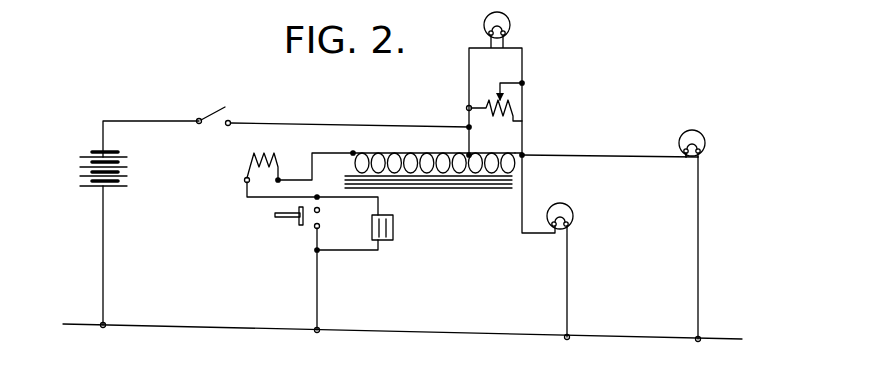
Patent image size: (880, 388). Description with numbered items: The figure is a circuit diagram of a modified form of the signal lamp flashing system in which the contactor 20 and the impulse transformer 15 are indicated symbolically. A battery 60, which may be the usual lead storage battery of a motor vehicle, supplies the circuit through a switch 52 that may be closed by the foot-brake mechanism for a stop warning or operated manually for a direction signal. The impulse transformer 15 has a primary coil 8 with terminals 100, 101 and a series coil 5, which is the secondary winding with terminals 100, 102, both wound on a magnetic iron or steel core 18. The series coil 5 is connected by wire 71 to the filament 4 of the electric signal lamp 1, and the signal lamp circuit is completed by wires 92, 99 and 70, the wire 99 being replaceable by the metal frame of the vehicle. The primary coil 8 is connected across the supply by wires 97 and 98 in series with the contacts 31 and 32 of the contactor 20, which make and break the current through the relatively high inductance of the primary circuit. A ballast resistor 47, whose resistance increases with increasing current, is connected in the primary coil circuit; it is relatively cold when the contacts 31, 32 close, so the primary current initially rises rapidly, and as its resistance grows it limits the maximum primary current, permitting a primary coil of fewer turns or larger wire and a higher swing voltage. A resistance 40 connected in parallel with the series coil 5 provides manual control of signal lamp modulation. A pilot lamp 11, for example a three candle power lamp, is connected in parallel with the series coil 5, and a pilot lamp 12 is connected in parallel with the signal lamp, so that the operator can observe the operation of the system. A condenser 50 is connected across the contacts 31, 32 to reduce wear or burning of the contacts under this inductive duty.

The signal lamp 1 is at (709, 137).
The filament 4 is at (679, 132).
The series coil 5 is at (495, 188).
The primary coil 8 is at (400, 154).
The pilot lamp 11 is at (512, 23).
The pilot lamp 12 is at (576, 216).
The impulse transformer 15 is at (420, 151).
The magnetic core 18 is at (426, 186).
The contactor device 20 is at (296, 229).
The contact 31 is at (321, 229).
The contact 32 is at (323, 210).
The resistance 40 is at (524, 121).
The ballast resistor 47 is at (253, 157).
The condenser 50 is at (394, 242).
The switch 52 is at (212, 118).
The battery 60 is at (98, 150).
The wire 70 is at (699, 255).
The wire 71 is at (602, 157).
The wire 92 is at (102, 252).
The wire 97 is at (313, 164).
The wire 98 is at (321, 290).
The wire 99 is at (428, 336).
The terminal 100 is at (471, 155).
The terminal 101 is at (352, 150).
The terminal 102 is at (527, 153).